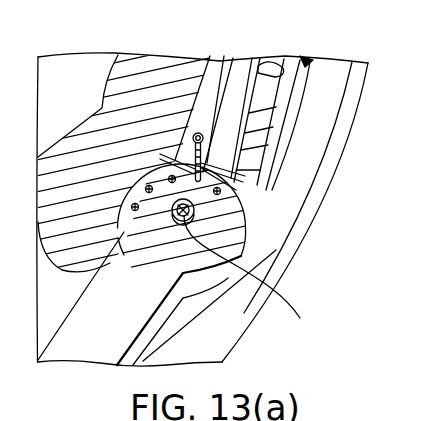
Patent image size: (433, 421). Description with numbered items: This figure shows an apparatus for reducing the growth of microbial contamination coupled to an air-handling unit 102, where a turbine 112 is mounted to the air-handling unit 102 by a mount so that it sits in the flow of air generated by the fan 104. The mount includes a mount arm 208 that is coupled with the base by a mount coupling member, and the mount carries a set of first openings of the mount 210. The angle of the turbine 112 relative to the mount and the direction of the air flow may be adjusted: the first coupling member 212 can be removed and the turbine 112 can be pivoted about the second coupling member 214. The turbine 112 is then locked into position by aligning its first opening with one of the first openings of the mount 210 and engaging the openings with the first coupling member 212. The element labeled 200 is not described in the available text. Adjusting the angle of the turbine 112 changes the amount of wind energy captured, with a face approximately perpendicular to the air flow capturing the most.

The air-handling unit 102 is at (299, 217).
The fan 104 is at (308, 178).
The turbine 112 is at (266, 124).
The cap assembly 200 is at (240, 78).
The mount arm 208 is at (72, 347).
The first openings of the mount 210 is at (171, 175).
The first coupling member 212 is at (199, 133).
The second coupling member 214 is at (249, 284).